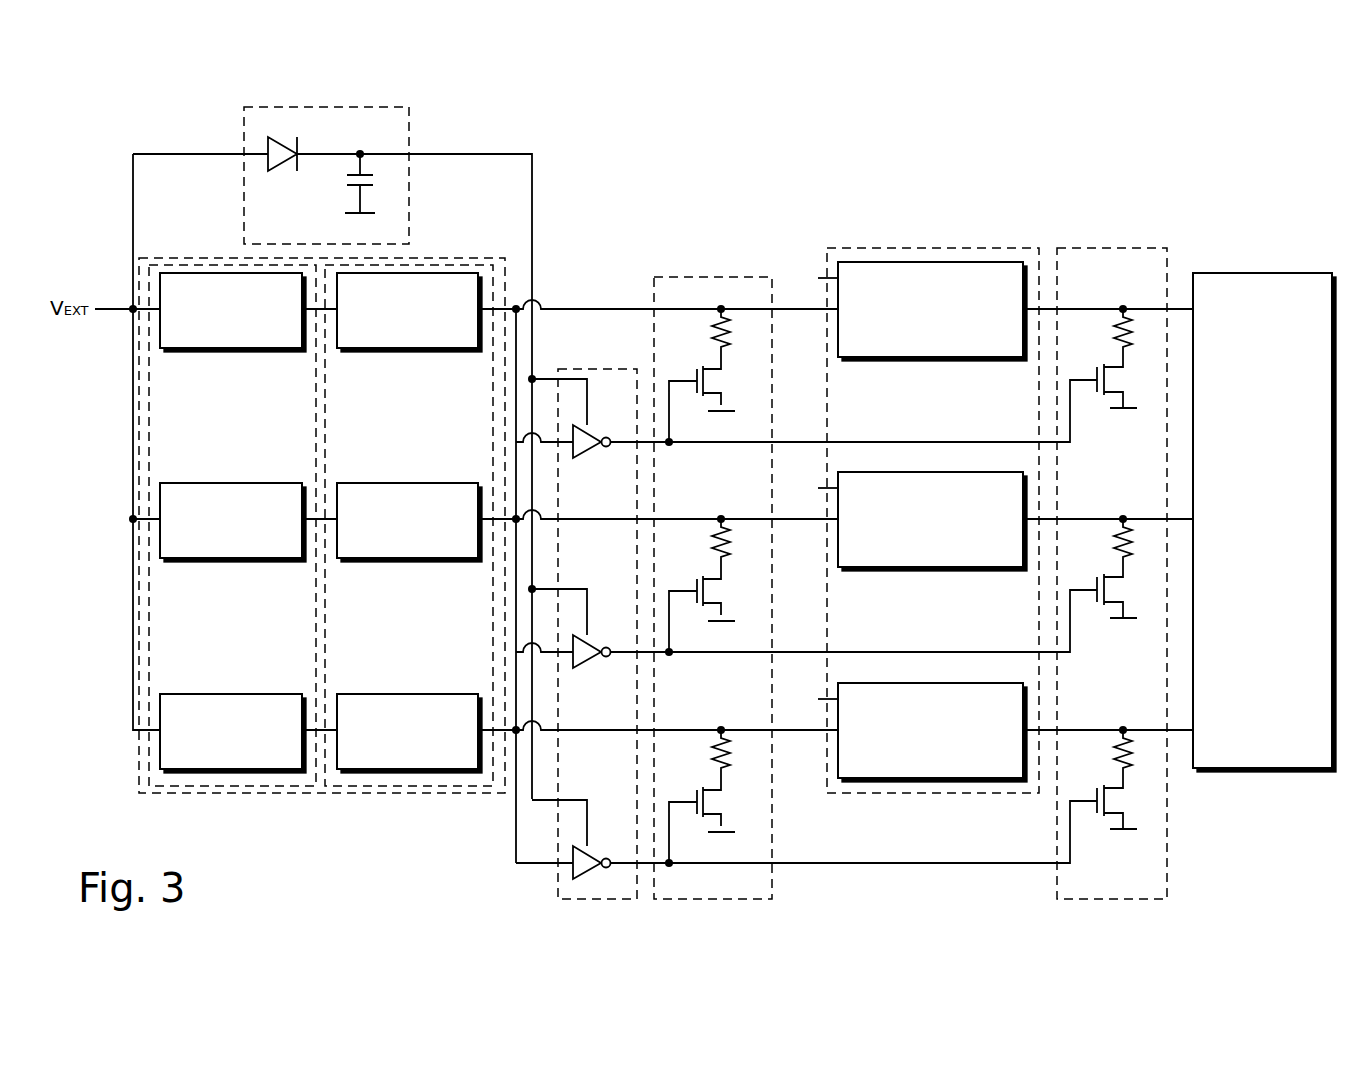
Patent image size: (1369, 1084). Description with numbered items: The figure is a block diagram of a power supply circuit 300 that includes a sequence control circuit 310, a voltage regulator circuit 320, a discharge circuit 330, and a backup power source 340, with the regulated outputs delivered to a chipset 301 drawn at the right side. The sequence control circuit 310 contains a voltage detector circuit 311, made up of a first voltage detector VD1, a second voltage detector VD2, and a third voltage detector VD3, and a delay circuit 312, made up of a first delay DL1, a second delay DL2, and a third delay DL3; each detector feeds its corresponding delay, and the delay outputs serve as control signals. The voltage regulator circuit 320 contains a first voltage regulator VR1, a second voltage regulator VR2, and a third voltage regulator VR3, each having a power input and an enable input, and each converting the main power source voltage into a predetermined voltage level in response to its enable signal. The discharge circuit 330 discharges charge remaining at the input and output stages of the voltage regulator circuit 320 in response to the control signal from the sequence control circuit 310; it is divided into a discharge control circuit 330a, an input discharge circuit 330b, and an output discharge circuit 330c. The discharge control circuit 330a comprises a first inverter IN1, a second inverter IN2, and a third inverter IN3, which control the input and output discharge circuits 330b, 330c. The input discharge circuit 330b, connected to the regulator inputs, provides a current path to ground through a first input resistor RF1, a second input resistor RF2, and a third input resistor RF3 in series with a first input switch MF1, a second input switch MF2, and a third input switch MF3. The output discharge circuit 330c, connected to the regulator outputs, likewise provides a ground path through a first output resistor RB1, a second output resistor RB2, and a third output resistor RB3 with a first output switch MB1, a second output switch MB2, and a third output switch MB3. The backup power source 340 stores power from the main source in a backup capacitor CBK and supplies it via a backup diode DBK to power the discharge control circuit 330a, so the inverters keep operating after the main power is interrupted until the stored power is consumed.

The power supply circuit 300 is at (1249, 146).
The chipset 301 is at (1290, 272).
The sequence control circuit 310 is at (448, 257).
The voltage detector circuit 311 is at (230, 794).
The delay circuit 312 is at (388, 794).
The voltage regulator circuit 320 is at (997, 247).
The discharge circuit 330 is at (612, 900).
The discharge control circuit 330a is at (597, 368).
The input discharge circuit 330b is at (730, 276).
The output discharge circuit 330c is at (1120, 247).
The backup power source 340 is at (409, 126).
The first voltage detector VD1 is at (197, 352).
The second voltage detector VD2 is at (233, 498).
The third voltage detector VD3 is at (233, 709).
The first delay DL1 is at (373, 352).
The second delay DL2 is at (409, 498).
The third delay DL3 is at (409, 709).
The first inverter IN1 is at (578, 418).
The second inverter IN2 is at (578, 628).
The third inverter IN3 is at (578, 839).
The first input resistor RF1 is at (705, 338).
The second input resistor RF2 is at (705, 548).
The third input resistor RF3 is at (705, 759).
The first input switch MF1 is at (711, 404).
The second input switch MF2 is at (711, 614).
The third input switch MF3 is at (711, 825).
The first output resistor RB1 is at (1108, 337).
The second output resistor RB2 is at (1108, 547).
The third output resistor RB3 is at (1108, 758).
The first output switch MB1 is at (1112, 400).
The second output switch MB2 is at (1112, 610).
The third output switch MB3 is at (1112, 821).
The first voltage regulator VR1 is at (910, 361).
The second voltage regulator VR2 is at (903, 544).
The third voltage regulator VR3 is at (903, 755).
The backup diode DBK is at (284, 141).
The backup capacitor CBK is at (351, 195).